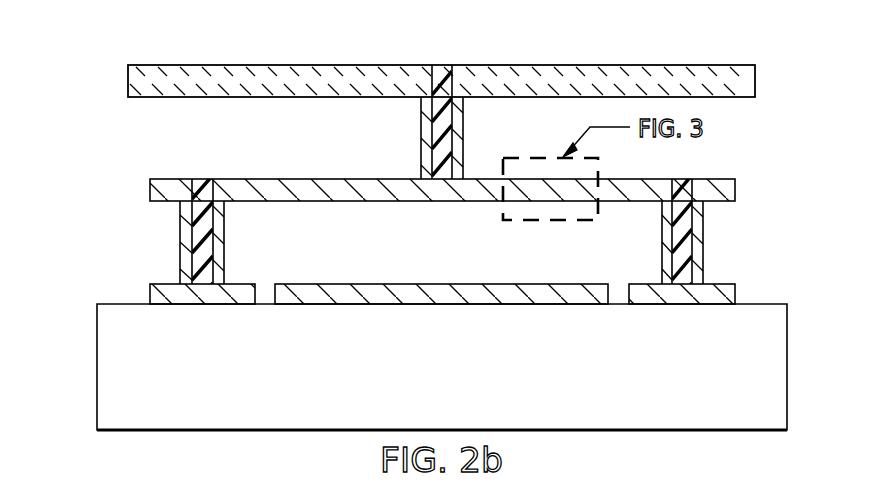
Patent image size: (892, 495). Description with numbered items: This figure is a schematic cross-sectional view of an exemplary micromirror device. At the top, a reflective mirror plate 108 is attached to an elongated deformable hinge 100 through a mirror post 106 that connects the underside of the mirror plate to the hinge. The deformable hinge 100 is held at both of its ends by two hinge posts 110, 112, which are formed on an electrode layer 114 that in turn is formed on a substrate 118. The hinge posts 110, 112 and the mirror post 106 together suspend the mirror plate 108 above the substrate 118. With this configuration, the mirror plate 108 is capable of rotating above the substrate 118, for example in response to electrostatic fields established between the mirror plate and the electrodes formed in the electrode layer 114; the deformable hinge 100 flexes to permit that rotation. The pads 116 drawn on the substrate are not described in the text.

The deformable hinge 100 is at (281, 179).
The mirror post 106 is at (441, 65).
The reflective mirror plate 108 is at (128, 80).
The hinge post 110 is at (180, 240).
The hinge post 112 is at (703, 243).
The electrode layer 114 is at (120, 216).
The contact pads 116 is at (248, 284).
The substrate 118 is at (463, 382).